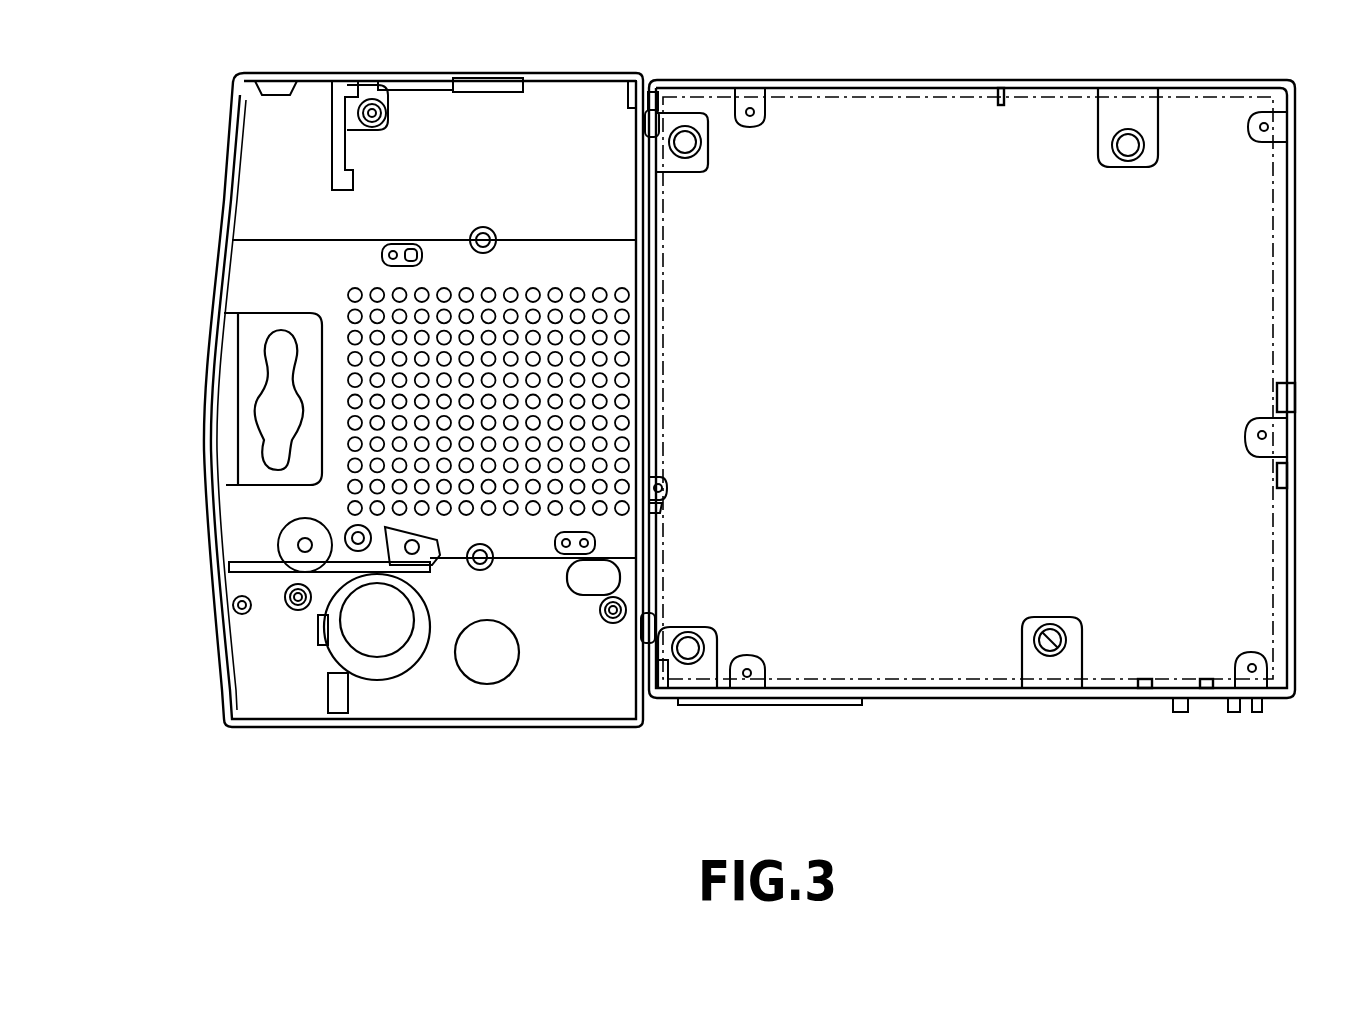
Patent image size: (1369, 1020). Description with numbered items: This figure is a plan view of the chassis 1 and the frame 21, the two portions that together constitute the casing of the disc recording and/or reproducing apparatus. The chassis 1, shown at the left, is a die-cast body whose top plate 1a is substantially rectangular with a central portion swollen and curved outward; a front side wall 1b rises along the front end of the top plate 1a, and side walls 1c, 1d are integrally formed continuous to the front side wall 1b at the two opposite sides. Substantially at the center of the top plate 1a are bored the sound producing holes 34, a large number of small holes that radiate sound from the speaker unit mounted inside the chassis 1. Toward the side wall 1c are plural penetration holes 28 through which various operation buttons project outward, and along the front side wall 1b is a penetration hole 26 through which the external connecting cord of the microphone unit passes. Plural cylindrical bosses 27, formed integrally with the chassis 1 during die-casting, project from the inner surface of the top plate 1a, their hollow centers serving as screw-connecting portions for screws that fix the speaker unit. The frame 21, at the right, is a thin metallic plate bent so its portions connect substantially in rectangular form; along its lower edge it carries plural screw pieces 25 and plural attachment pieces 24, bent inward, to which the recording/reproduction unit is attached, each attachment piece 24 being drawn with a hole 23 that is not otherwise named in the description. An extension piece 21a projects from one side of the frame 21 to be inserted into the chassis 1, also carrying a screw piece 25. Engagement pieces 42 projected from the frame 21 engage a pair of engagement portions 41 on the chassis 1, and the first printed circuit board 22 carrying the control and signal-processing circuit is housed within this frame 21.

The chassis 1 is at (535, 727).
The top plate 1a is at (285, 265).
The front side wall 1b is at (222, 578).
The side wall 1c is at (366, 722).
The side wall 1d is at (495, 80).
The frame 21 is at (1208, 700).
The extension piece 21a is at (423, 80).
The first printed circuit board 22 is at (922, 660).
The screw hole 23 is at (690, 150).
The attachment piece 24 is at (706, 140).
The screw piece 25 is at (368, 88).
The penetration hole 26 is at (258, 403).
The cylindrical boss 27 is at (388, 118).
The penetration hole 28 is at (600, 575).
The sound producing holes 34 is at (375, 330).
The engagement portion 41 is at (660, 92).
The engagement piece 42 is at (643, 117).